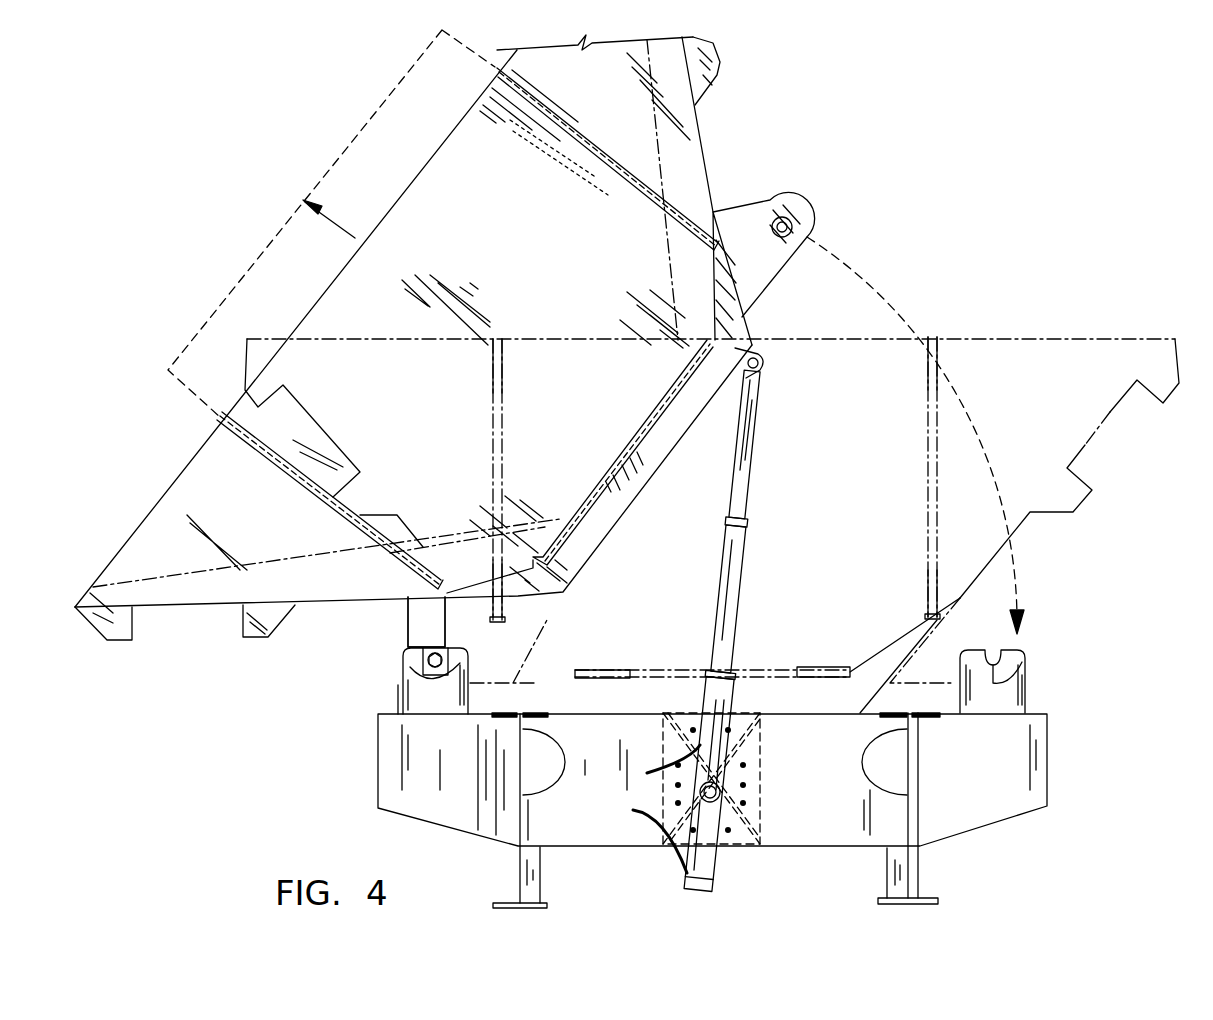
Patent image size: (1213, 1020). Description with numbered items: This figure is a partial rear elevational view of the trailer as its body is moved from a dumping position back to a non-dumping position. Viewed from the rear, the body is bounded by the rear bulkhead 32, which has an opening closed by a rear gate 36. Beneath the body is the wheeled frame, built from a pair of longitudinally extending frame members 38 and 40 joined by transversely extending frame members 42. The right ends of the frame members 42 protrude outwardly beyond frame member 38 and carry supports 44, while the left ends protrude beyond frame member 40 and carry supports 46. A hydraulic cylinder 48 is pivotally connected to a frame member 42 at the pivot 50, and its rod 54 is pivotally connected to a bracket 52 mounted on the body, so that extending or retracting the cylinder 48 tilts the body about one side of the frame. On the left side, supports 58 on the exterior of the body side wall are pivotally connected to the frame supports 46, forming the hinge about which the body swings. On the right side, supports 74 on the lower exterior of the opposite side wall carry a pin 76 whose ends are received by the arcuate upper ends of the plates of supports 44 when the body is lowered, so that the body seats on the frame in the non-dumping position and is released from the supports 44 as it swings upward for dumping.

The rear bulkhead 32 is at (602, 97).
The rear gate 36 is at (693, 265).
The longitudinally extending frame member 38 is at (936, 900).
The longitudinally extending frame member 40 is at (520, 865).
The transversely extending frame member 42 is at (712, 814).
The support 44 is at (1024, 654).
The support 46 is at (422, 693).
The hydraulic cylinder 48 is at (742, 588).
The pivotal connection 50 is at (722, 786).
The bracket 52 is at (759, 347).
The rod 54 is at (750, 447).
The support 58 is at (447, 641).
The support 74 is at (770, 201).
The pin 76 is at (793, 220).